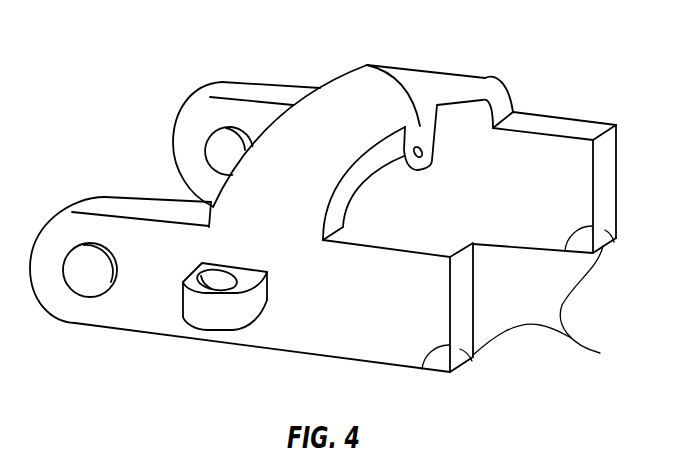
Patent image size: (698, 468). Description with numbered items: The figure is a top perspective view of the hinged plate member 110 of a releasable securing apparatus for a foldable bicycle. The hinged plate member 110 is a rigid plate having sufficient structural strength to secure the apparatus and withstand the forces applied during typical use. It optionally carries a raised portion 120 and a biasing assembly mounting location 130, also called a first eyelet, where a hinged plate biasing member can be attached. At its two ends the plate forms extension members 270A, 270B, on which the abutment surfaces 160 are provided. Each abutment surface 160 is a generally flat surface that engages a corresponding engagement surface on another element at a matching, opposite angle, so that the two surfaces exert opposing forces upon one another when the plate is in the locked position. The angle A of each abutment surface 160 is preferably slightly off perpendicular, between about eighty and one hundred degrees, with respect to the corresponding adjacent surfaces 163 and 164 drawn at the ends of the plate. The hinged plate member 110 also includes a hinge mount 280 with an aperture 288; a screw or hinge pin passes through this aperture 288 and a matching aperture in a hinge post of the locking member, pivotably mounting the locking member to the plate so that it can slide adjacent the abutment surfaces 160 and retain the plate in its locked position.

The hinged plate member 110 is at (585, 55).
The raised portion 120 is at (428, 82).
The biasing assembly mounting location 130 is at (367, 66).
The abutment surfaces 160 is at (559, 228).
The adjacent surface 163 is at (449, 373).
The adjacent surface 164 is at (590, 254).
The extension member 270A is at (337, 358).
The extension member 270B is at (567, 118).
The hinge mount 280 is at (212, 332).
The aperture 288 is at (183, 283).